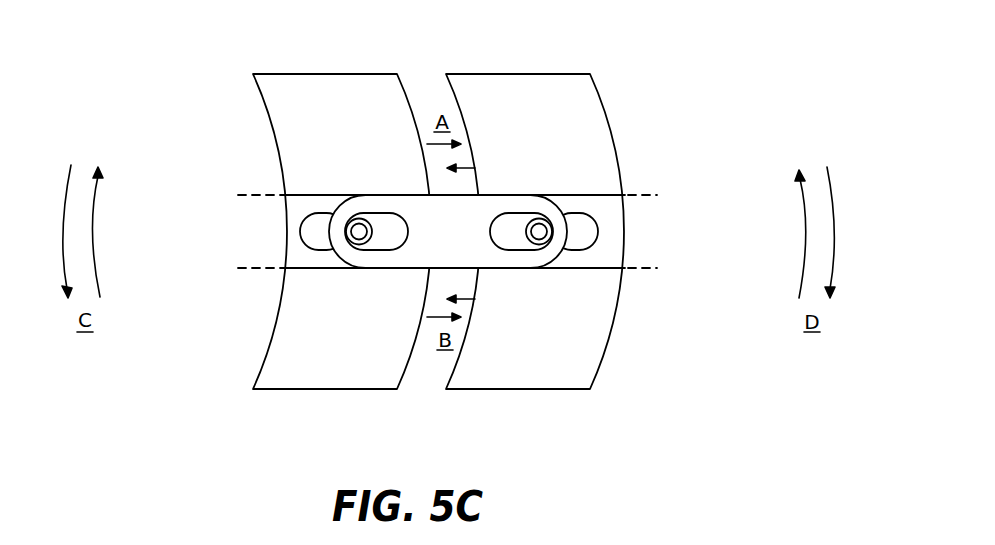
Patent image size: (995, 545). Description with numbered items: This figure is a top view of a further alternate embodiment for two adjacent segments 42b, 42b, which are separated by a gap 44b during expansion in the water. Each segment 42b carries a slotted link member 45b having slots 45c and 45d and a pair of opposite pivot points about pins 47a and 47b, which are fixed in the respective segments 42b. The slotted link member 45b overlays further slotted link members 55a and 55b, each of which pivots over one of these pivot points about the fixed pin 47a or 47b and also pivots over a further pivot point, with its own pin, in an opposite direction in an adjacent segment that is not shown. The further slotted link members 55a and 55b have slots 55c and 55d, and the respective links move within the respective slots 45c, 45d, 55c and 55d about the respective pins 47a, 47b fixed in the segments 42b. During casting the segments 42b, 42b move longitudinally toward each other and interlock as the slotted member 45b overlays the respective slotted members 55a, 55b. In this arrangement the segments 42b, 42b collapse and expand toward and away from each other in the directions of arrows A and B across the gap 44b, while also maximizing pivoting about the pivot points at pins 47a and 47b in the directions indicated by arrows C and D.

The segment 42b is at (275, 389).
The gap 44b is at (418, 70).
The slotted link member 45b is at (491, 200).
The slot 45c is at (392, 232).
The slot 45d is at (513, 232).
The pin 47a is at (360, 233).
The pin 47b is at (540, 228).
The slotted link member 55a is at (253, 194).
The slotted link member 55b is at (638, 195).
The slot 55c is at (314, 240).
The slot 55d is at (580, 240).